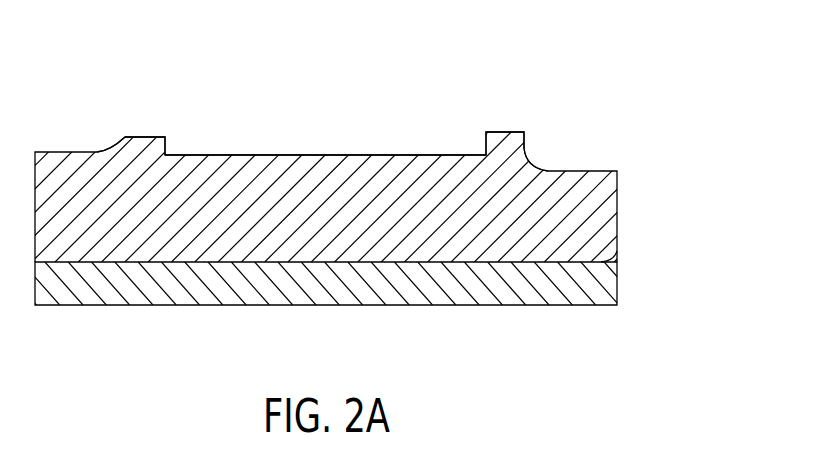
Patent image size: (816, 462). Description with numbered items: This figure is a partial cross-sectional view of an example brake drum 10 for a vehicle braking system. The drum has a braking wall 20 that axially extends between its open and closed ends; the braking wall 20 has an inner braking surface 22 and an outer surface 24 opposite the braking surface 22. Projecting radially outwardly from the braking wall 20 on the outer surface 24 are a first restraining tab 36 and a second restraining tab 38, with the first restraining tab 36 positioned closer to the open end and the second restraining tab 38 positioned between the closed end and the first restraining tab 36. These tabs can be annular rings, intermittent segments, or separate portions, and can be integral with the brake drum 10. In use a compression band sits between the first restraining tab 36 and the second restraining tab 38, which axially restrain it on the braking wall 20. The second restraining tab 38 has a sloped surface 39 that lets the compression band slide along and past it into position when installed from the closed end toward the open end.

The brake drum 10 is at (372, 184).
The braking wall 20 is at (372, 169).
The braking surface 22 is at (498, 305).
The outer surface 24 is at (371, 155).
The first restraining tab 36 is at (505, 142).
The second restraining tab 38 is at (147, 148).
The sloped surface 39 is at (115, 150).